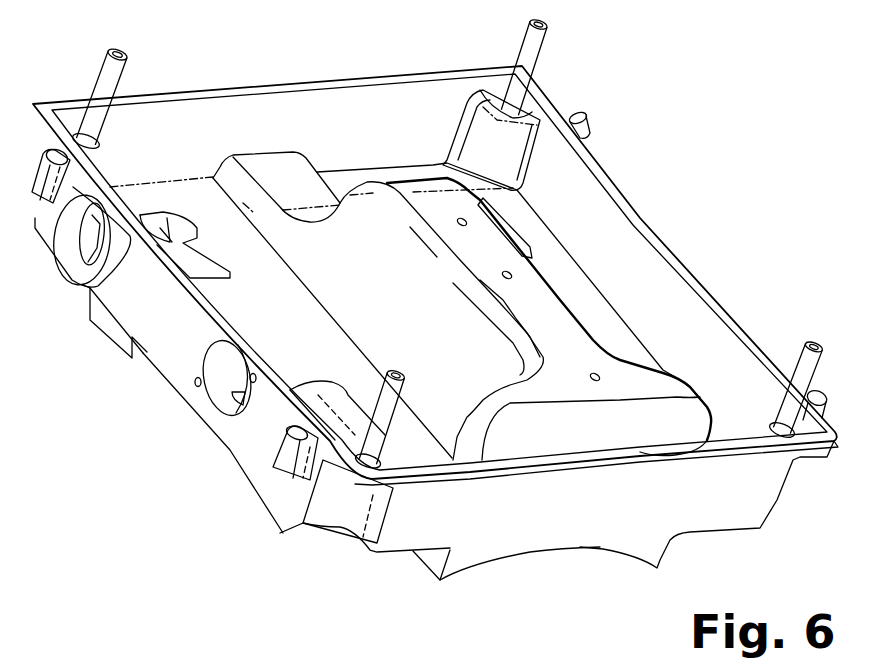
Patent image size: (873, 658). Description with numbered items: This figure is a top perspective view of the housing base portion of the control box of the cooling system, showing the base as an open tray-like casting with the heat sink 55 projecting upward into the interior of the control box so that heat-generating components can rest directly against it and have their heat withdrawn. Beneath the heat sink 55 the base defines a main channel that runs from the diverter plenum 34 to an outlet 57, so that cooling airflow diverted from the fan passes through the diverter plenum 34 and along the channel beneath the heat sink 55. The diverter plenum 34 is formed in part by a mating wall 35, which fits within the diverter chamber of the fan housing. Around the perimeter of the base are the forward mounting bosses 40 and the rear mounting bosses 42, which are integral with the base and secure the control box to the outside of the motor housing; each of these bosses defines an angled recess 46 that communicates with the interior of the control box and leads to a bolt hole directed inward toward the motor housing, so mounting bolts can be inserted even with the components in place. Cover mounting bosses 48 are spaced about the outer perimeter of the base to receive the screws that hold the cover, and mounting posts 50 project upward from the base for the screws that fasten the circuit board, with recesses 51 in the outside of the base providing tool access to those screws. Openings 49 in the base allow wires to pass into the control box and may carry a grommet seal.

The diverter plenum 34 is at (637, 420).
The mating wall 35 is at (543, 513).
The forward mounting bosses 40 is at (245, 480).
The rear mounting bosses 42 is at (110, 338).
The recess 46 is at (183, 240).
The cover mounting bosses 48 is at (36, 180).
The openings 49 is at (68, 247).
The mounting posts 50 is at (118, 73).
The recesses 51 is at (370, 553).
The heat sink 55 is at (543, 298).
The outlet 57 is at (287, 177).